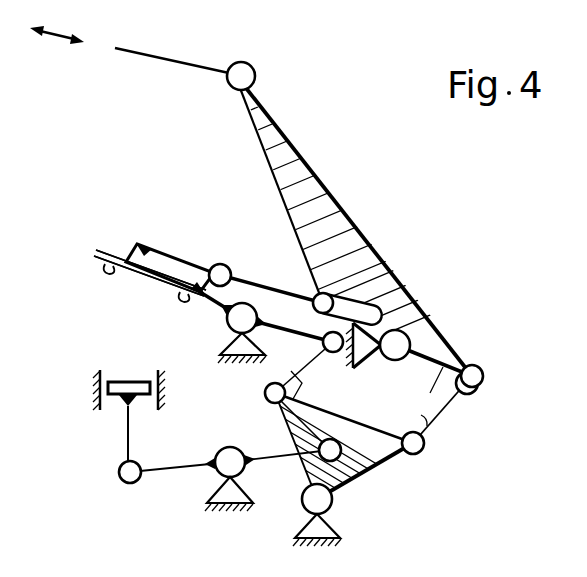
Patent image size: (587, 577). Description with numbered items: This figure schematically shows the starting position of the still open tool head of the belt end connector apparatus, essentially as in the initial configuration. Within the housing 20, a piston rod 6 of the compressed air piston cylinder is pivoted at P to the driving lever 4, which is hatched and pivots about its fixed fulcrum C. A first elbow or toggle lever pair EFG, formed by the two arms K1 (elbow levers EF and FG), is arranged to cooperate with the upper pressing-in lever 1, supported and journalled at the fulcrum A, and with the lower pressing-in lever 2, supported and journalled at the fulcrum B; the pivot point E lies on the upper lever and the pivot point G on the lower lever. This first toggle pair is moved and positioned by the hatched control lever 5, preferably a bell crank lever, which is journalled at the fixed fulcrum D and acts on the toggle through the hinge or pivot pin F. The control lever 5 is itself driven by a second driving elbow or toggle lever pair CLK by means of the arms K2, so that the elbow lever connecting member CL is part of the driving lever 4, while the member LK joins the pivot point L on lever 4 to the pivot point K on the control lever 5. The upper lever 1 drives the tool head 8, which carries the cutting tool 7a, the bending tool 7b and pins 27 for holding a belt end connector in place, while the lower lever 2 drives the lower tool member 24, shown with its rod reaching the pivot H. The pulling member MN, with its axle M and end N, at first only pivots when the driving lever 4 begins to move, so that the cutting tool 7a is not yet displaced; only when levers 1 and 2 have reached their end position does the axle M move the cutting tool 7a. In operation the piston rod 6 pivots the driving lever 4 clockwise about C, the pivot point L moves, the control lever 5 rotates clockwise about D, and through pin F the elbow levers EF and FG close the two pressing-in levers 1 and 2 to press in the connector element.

The upper pressing-in lever 1 is at (228, 292).
The lower pressing-in lever 2 is at (166, 470).
The driving lever 4 is at (371, 238).
The control lever 5 is at (350, 477).
The piston rod 6 is at (146, 53).
The cutting tool 7a is at (123, 259).
The bending tool 7b is at (144, 247).
The tool head 8 is at (148, 280).
The housing 20 is at (100, 392).
The lower tool member 24 is at (126, 382).
The pins 27 is at (108, 272).
The pivot P is at (252, 73).
The pulling member pivot point N is at (222, 263).
The axle of pulling member M is at (314, 295).
The fulcrum A is at (227, 322).
The toggle lever pivot point E is at (322, 345).
The fixed fulcrum C is at (401, 357).
The pivot point L is at (483, 378).
The arms of first toggle lever pair K1 is at (310, 388).
The arms of second toggle lever pair K2 is at (437, 405).
The hinge or pivot pin F is at (265, 393).
The toggle lever pivot point G is at (319, 458).
The toggle lever pivot point K is at (420, 452).
The fixed fulcrum D is at (331, 503).
The fulcrum B is at (224, 457).
The pivot H is at (119, 472).